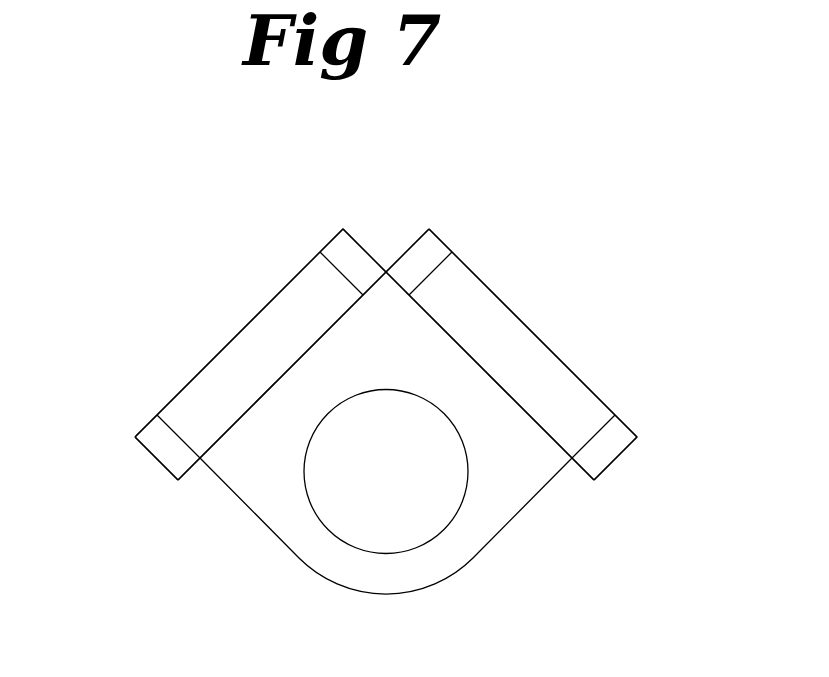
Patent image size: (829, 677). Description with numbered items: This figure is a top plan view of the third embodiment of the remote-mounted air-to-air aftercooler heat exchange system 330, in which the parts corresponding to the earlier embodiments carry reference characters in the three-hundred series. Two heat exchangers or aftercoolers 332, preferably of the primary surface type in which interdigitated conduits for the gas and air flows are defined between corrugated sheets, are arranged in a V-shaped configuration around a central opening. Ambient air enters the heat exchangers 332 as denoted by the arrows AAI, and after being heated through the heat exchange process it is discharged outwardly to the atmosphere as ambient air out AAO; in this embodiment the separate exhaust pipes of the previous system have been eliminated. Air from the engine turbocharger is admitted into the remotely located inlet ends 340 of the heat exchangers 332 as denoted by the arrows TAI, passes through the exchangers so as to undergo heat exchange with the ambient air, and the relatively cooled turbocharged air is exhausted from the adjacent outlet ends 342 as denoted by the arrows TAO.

The remote-mounted air-to-air aftercooler heat exchange system 330 is at (556, 208).
The heat exchanger or aftercooler 332 is at (483, 347).
The inlet end 340 is at (153, 436).
The outlet end 342 is at (342, 248).
The turbocharged air out TAO is at (406, 247).
The turbocharged air in TAI is at (152, 463).
The ambient air out AAO is at (190, 343).
The ambient air in AAI is at (323, 533).